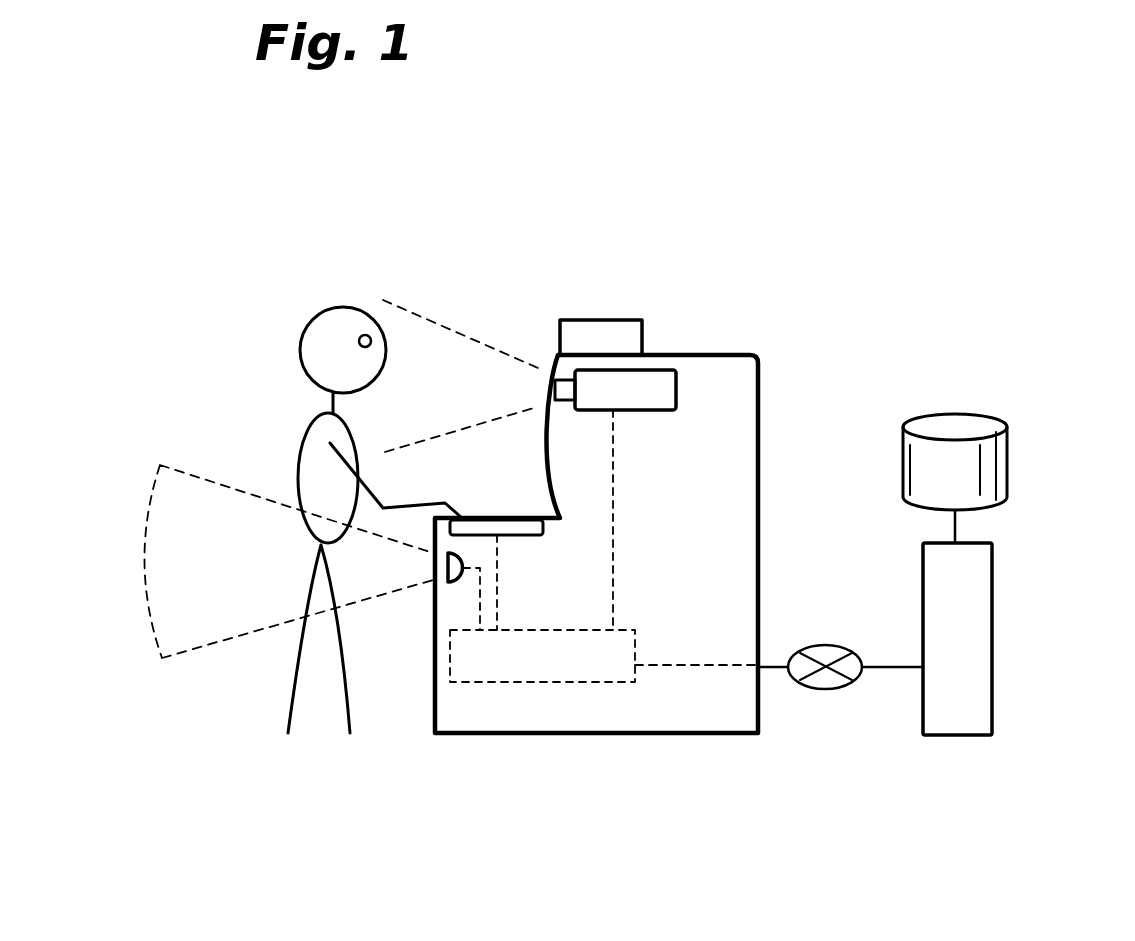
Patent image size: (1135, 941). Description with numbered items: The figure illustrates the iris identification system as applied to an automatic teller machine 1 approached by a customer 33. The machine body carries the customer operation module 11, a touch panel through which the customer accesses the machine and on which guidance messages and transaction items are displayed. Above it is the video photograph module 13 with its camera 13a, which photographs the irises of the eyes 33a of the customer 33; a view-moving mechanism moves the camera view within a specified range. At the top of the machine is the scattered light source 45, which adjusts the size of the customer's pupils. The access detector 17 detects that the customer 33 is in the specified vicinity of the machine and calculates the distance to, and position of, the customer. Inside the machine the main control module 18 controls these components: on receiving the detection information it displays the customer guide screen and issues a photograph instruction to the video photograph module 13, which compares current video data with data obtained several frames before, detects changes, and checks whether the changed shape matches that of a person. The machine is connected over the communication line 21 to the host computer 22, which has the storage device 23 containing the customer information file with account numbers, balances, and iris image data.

The automatic teller machine 1 is at (762, 412).
The customer operation module 11 is at (503, 520).
The video photograph module 13 is at (653, 382).
The camera 13a is at (550, 378).
The access detector 17 is at (439, 583).
The main control module 18 is at (590, 682).
The communication line 21 is at (817, 692).
The host computer 22 is at (957, 705).
The storage device 23 is at (943, 418).
The customer 33 is at (297, 347).
The eyes 33a is at (371, 345).
The scattered light source 45 is at (618, 320).